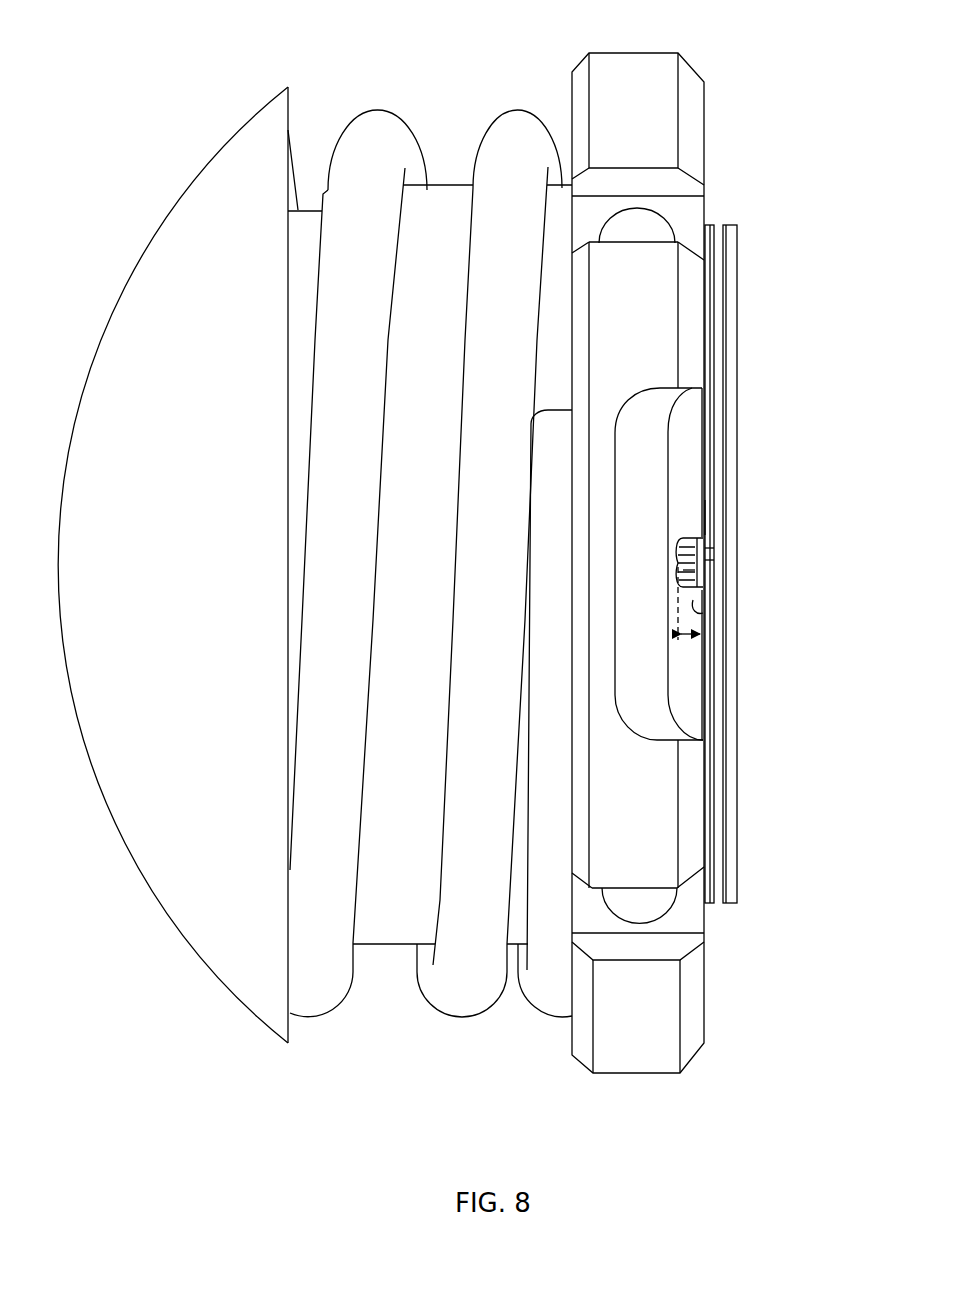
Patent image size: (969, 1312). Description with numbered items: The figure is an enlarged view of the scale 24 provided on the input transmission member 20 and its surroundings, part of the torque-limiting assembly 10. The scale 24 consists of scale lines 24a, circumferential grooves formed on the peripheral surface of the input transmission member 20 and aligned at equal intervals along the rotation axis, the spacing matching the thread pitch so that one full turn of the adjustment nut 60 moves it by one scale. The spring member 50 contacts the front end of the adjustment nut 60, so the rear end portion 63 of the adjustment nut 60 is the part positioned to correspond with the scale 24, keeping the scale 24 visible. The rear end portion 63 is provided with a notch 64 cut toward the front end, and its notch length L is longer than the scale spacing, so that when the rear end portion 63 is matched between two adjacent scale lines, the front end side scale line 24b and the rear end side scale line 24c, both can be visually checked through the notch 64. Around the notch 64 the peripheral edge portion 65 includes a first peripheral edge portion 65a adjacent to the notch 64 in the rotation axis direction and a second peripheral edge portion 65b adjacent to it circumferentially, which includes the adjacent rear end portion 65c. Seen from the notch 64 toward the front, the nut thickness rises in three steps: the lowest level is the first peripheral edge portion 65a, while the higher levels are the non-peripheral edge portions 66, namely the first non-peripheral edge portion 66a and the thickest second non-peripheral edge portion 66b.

The fastening structure 10 is at (464, 108).
The input transmission member 20 is at (768, 586).
The scale 24 is at (768, 630).
The scale lines 24a is at (727, 262).
The front end side scale line 24b is at (705, 550).
The rear end side scale line 24c is at (710, 560).
The spring member 50 is at (467, 998).
The adjustment nut 60 is at (640, 1040).
The rear end portion 63 is at (719, 516).
The notch 64 is at (700, 578).
The peripheral edge portion 65 is at (481, 528).
The first peripheral edge portion 65a is at (673, 563).
The second peripheral edge portion 65b is at (693, 523).
The adjacent rear end portion 65c is at (703, 537).
The non-peripheral edge portions 66 is at (410, 564).
The first non-peripheral edge portion 66a is at (643, 563).
The second non-peripheral edge portion 66b is at (603, 563).